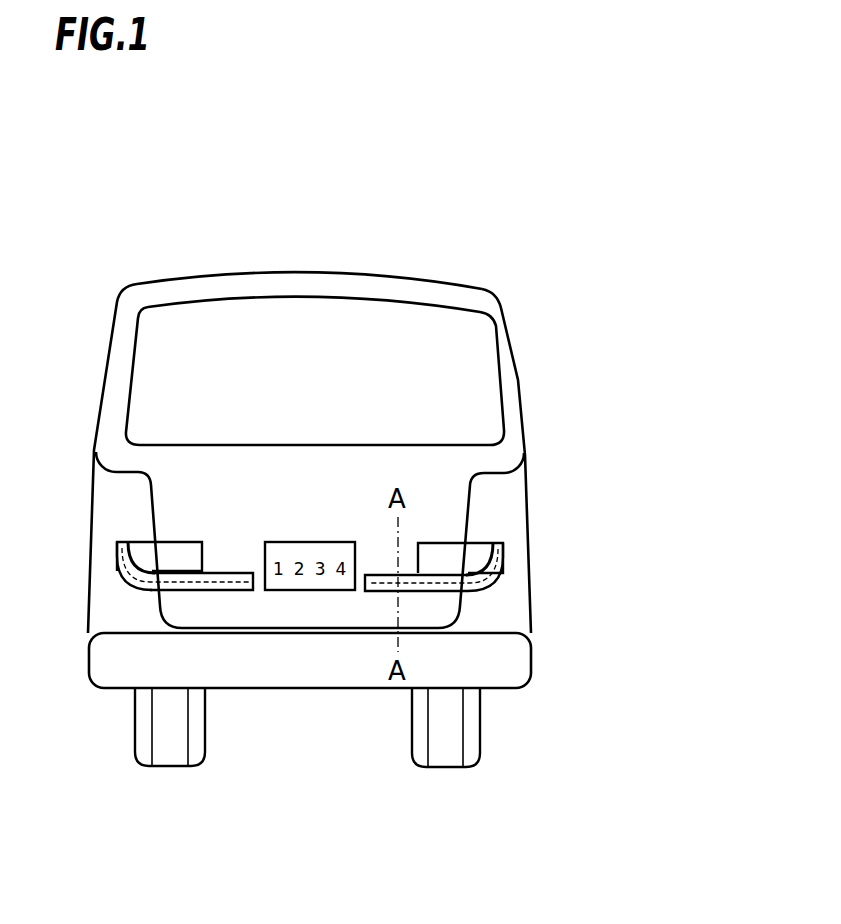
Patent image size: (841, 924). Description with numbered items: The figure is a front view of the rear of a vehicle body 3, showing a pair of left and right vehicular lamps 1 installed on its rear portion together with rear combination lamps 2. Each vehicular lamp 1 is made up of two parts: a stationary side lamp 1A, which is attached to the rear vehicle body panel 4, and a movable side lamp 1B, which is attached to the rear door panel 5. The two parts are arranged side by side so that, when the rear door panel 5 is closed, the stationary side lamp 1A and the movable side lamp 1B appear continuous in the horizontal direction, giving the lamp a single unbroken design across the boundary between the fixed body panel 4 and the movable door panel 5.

The vehicular lamp 1 is at (394, 606).
The stationary side lamp 1A is at (503, 573).
The movable side lamp 1B is at (437, 597).
The rear combination lamp 2 is at (430, 552).
The vehicle body 3 is at (313, 272).
The rear vehicle body panel 4 is at (512, 503).
The rear door panel 5 is at (310, 617).